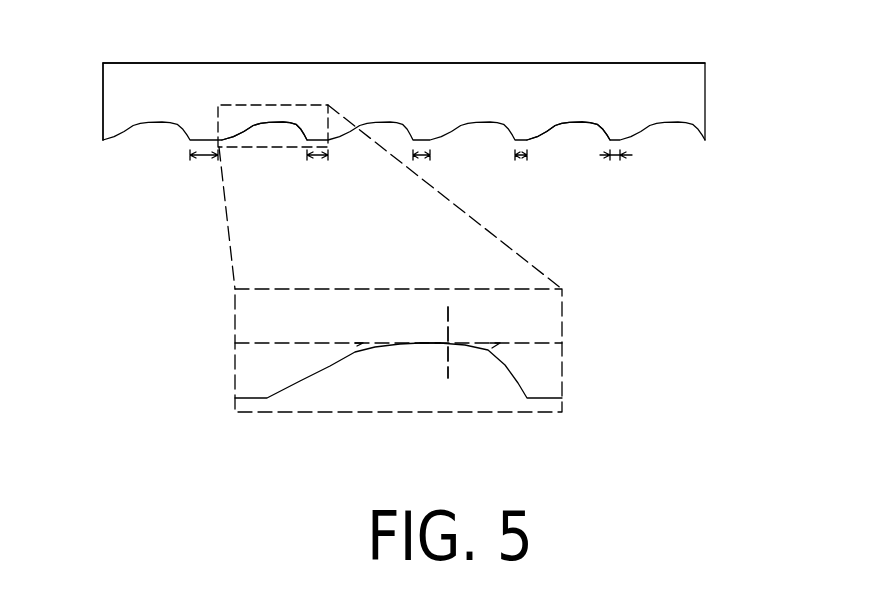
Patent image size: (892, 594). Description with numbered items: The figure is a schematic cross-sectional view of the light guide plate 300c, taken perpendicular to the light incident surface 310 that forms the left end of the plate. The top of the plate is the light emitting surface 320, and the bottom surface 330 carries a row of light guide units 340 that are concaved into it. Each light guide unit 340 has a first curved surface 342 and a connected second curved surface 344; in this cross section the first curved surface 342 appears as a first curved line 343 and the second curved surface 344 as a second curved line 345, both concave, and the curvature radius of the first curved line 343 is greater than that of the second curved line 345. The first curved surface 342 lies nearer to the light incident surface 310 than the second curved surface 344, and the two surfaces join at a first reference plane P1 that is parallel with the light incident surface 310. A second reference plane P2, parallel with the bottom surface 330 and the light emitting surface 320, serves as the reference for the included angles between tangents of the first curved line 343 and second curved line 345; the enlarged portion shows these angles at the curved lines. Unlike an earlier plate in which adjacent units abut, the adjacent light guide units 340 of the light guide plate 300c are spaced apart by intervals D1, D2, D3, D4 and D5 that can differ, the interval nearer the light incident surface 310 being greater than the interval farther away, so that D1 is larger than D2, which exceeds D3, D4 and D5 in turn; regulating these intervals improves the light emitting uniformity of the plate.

The light guide plate 300c is at (715, 374).
The light incident surface 310 is at (102, 71).
The light emitting surface 320 is at (688, 63).
The bottom surface 330 is at (686, 140).
The light guide units 340 is at (290, 124).
The first curved surface 342 is at (545, 138).
The second curved surface 344 is at (603, 138).
The first curved line 343 is at (352, 363).
The second curved line 345 is at (508, 369).
The interval D1 is at (208, 172).
The interval D2 is at (319, 172).
The interval D3 is at (425, 158).
The interval D4 is at (520, 172).
The interval D5 is at (616, 173).
The first reference plane P1 is at (449, 322).
The second reference plane P2 is at (400, 343).